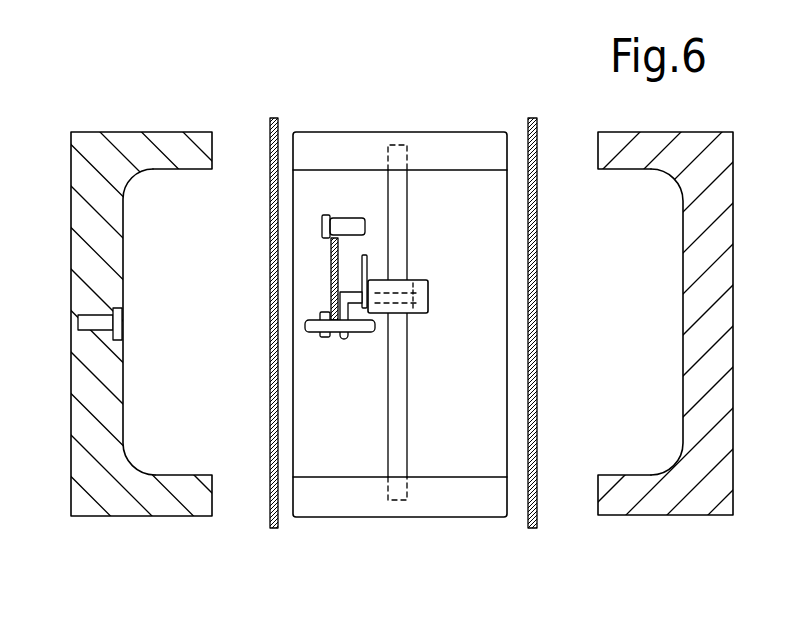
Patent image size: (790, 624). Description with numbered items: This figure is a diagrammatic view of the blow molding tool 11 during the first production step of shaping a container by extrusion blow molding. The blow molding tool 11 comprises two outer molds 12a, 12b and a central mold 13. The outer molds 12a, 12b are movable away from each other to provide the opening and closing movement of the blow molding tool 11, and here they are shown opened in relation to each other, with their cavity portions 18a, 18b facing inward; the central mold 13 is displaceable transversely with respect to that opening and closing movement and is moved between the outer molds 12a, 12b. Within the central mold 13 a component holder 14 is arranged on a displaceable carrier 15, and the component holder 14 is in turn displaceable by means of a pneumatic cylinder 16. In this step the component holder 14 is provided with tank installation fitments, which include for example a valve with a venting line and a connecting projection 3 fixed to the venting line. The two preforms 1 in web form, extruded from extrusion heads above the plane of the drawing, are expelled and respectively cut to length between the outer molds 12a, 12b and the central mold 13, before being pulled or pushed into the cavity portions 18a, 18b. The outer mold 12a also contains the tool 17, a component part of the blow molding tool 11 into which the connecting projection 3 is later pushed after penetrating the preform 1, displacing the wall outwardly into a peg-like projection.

The blow molding tool 11 is at (96, 86).
The preform 1 is at (277, 127).
The central mold 13 is at (427, 135).
The carrier 15 is at (398, 367).
The pneumatic cylinder 16 is at (428, 293).
The component holder 14 is at (356, 340).
The connecting projection 3 is at (311, 325).
The tool 17 is at (86, 322).
The cavity portion 18a is at (163, 475).
The cavity portion 18b is at (642, 472).
The outer mold 12a is at (133, 517).
The outer mold 12b is at (665, 502).